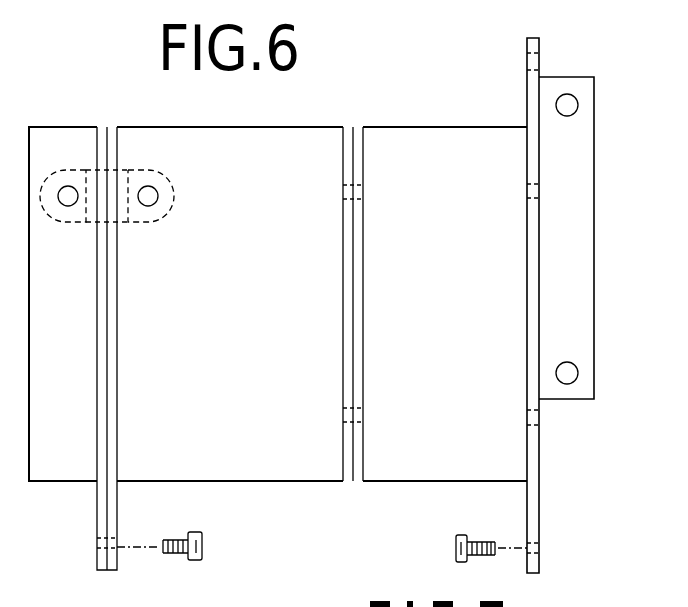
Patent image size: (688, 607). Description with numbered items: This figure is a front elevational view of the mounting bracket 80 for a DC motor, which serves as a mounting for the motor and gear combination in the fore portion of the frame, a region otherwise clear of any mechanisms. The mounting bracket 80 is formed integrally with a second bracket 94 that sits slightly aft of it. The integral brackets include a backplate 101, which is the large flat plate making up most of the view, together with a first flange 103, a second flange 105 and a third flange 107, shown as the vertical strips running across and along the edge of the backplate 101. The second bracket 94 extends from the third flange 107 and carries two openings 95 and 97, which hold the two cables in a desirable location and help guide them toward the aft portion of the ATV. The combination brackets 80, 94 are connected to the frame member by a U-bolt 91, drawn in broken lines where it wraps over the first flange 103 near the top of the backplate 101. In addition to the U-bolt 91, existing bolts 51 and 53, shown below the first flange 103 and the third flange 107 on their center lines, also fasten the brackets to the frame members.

The backplate 101 is at (271, 160).
The first flange 103 is at (111, 338).
The second flange 105 is at (355, 340).
The third flange 107 is at (533, 312).
The second bracket 94 is at (580, 148).
The opening 95 is at (563, 105).
The opening 97 is at (567, 373).
The U-bolt 91 is at (136, 170).
The existing bolt 51 is at (199, 548).
The existing bolt 53 is at (460, 558).
The mounting bracket 80 is at (299, 484).